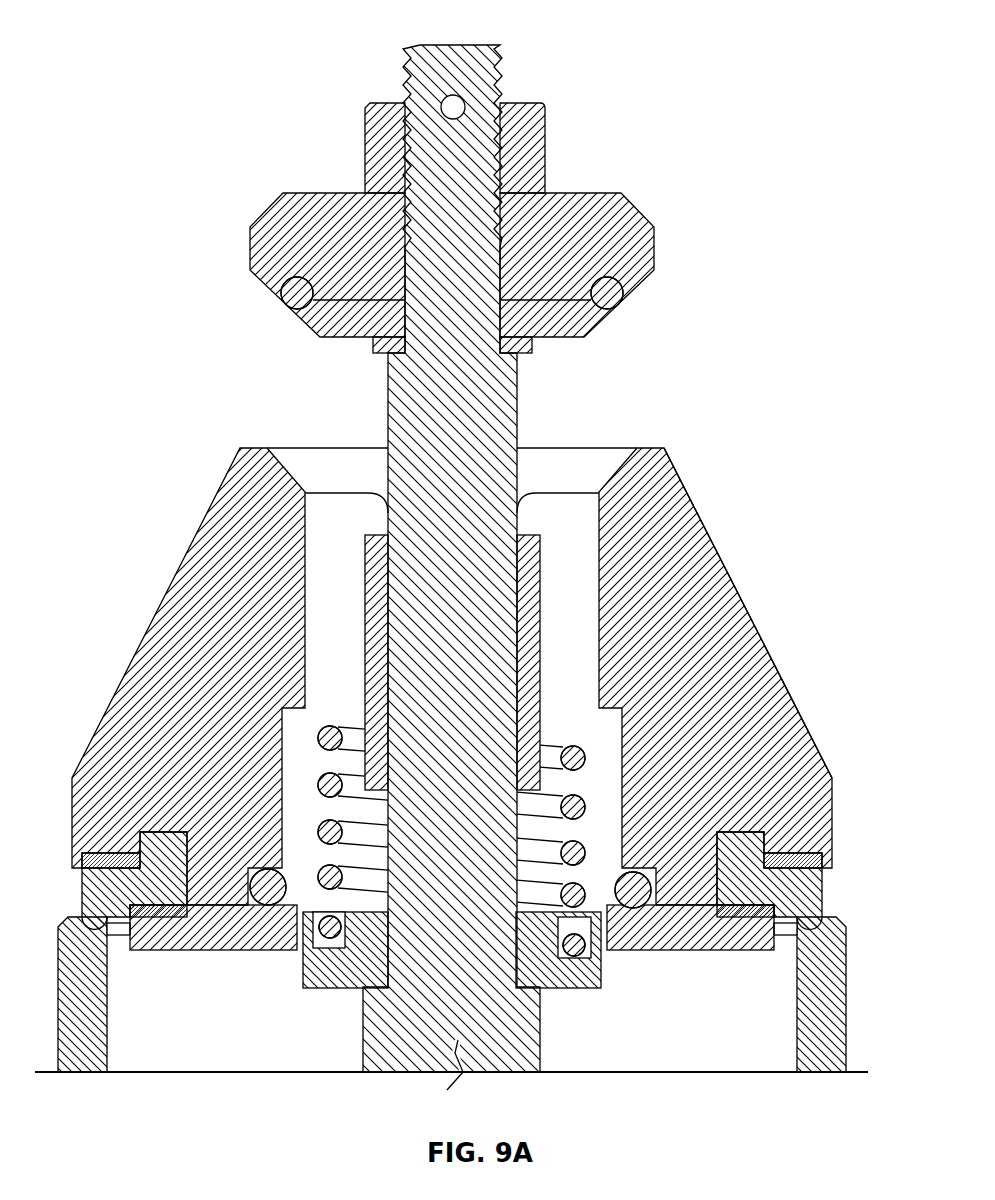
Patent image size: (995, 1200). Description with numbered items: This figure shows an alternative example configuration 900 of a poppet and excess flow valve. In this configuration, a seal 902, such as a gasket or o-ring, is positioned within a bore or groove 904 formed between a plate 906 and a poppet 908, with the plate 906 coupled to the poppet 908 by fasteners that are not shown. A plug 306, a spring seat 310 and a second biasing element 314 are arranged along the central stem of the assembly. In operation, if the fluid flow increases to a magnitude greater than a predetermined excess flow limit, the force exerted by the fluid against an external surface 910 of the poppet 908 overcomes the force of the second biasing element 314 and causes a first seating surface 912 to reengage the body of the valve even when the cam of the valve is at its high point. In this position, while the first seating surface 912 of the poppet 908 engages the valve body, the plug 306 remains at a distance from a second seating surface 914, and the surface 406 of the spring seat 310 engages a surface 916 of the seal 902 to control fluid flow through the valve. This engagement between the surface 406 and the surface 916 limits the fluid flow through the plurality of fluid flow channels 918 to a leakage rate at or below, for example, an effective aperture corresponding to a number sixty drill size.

The alternative example configuration 900 is at (206, 42).
The plug 306 is at (275, 250).
The spring seat 310 is at (553, 975).
The second biasing element 314 is at (585, 757).
The surface of the spring seat 406 is at (298, 983).
The seal 902 is at (268, 885).
The bore or groove 904 is at (650, 880).
The plate 906 is at (197, 927).
The poppet 908 is at (757, 633).
The external surface of the poppet 910 is at (720, 563).
The first seating surface 912 is at (838, 937).
The second seating surface 914 is at (605, 463).
The surface of the seal 916 is at (610, 950).
The fluid flow channels 918 is at (317, 528).